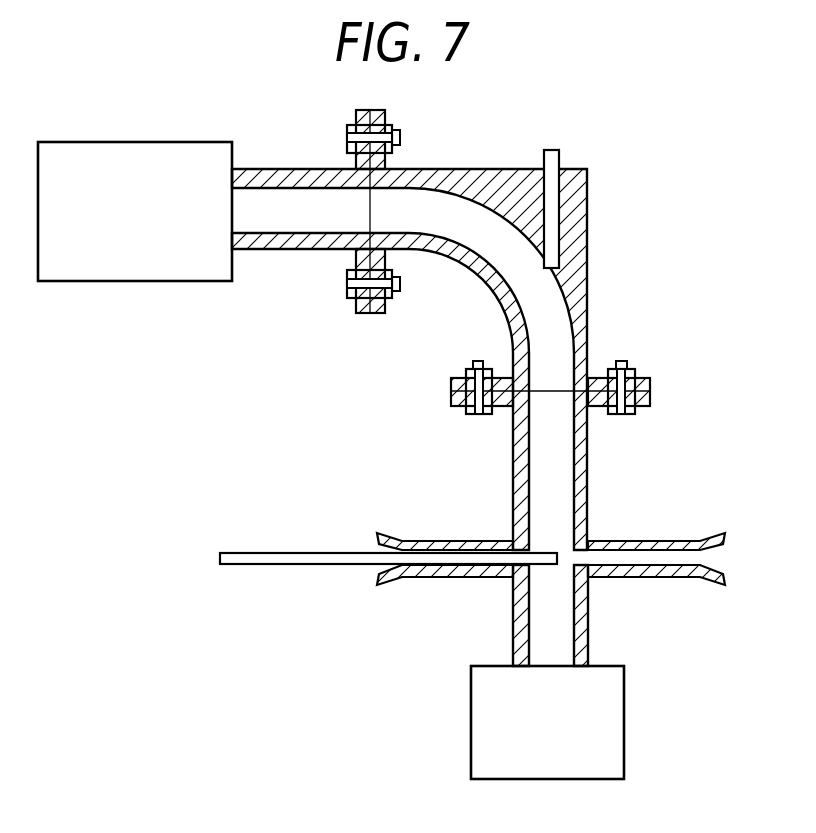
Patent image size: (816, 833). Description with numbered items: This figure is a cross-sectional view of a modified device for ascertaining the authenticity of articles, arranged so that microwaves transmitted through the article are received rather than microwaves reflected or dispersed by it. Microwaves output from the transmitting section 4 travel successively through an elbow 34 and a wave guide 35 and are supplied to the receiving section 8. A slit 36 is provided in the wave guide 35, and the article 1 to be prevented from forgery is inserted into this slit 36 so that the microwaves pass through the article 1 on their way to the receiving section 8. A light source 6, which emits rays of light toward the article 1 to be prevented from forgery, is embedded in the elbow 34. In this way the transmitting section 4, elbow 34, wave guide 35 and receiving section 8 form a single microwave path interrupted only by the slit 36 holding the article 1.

The article to be prevented from forgery 1 is at (268, 565).
The transmitting section 4 is at (192, 142).
The light source 6 is at (553, 150).
The receiving section 8 is at (612, 666).
The elbow 34 is at (589, 252).
The wave guide 35 is at (590, 478).
The slit 36 is at (603, 558).